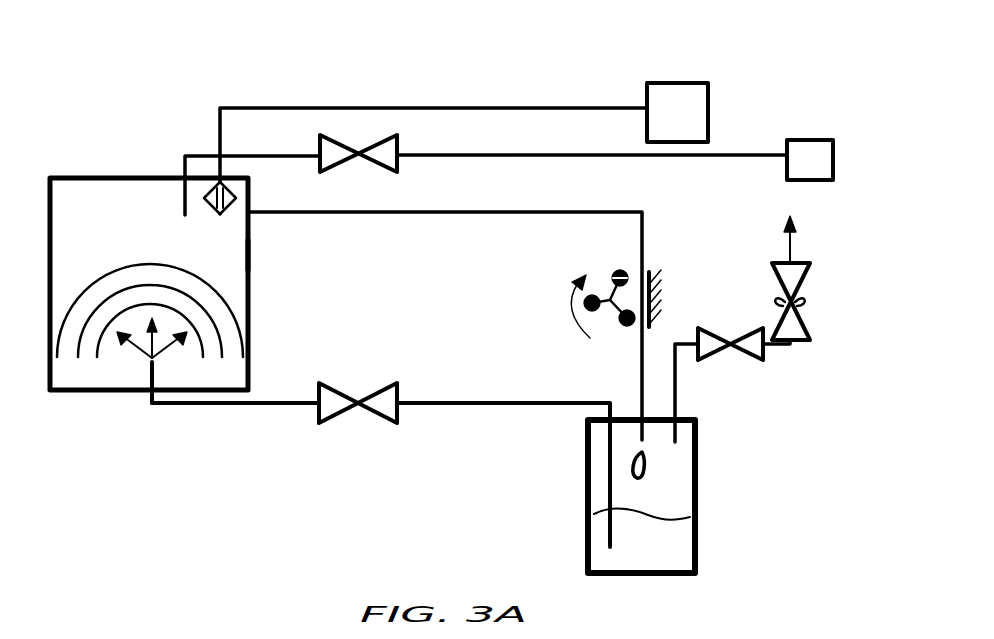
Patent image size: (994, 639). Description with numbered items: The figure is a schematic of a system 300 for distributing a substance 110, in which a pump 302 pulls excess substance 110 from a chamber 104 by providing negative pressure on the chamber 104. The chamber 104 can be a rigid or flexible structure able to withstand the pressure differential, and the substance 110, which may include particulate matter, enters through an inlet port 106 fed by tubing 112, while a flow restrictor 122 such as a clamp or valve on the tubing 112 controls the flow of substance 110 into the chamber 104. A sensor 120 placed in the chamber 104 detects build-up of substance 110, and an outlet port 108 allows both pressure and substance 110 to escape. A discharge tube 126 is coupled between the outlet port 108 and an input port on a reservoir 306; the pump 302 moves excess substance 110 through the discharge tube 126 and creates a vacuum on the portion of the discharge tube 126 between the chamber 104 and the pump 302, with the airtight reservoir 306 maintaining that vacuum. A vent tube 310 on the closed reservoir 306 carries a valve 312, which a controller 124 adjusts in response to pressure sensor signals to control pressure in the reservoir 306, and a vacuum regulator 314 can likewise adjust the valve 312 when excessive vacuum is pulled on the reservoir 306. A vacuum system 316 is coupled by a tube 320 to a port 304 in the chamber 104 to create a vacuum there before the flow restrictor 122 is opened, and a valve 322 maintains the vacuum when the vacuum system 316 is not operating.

The system 300 is at (212, 61).
The chamber 104 is at (255, 297).
The inlet port 106 is at (143, 400).
The outlet port 108 is at (258, 207).
The substance 110 is at (118, 273).
The tubing 112 is at (457, 408).
The sensor 120 is at (250, 253).
The flow restrictor 122 is at (355, 413).
The controller 124 is at (708, 118).
The discharge tube 126 is at (535, 211).
The pump 302 is at (662, 272).
The port 304 is at (180, 175).
The reservoir 306 is at (695, 462).
The vent tube 310 is at (676, 385).
The valve 312 is at (765, 362).
The vacuum regulator 314 is at (808, 318).
The vacuum system 316 is at (818, 180).
The tube 320 is at (522, 154).
The valve 322 is at (400, 150).